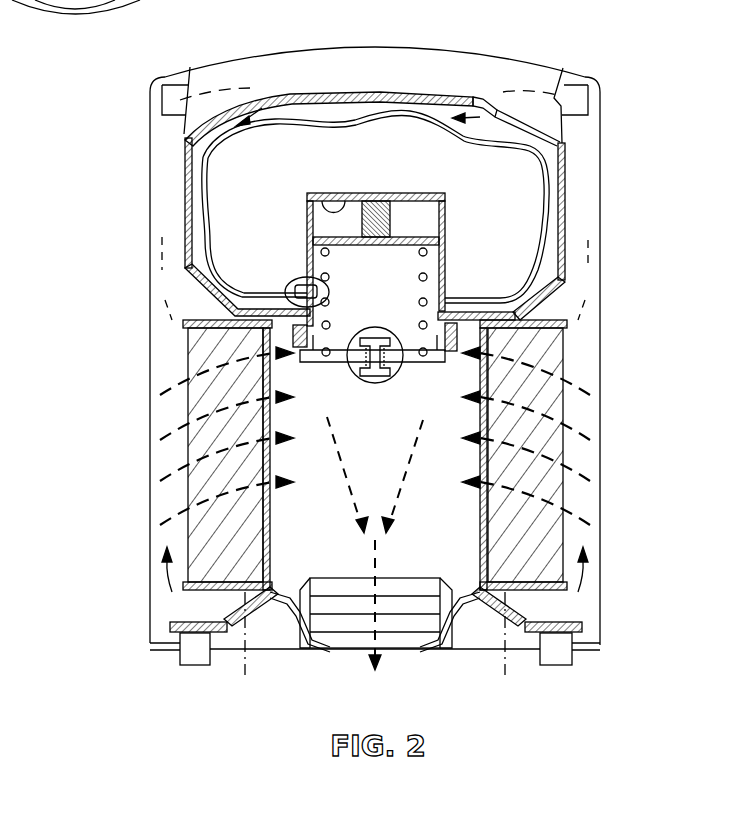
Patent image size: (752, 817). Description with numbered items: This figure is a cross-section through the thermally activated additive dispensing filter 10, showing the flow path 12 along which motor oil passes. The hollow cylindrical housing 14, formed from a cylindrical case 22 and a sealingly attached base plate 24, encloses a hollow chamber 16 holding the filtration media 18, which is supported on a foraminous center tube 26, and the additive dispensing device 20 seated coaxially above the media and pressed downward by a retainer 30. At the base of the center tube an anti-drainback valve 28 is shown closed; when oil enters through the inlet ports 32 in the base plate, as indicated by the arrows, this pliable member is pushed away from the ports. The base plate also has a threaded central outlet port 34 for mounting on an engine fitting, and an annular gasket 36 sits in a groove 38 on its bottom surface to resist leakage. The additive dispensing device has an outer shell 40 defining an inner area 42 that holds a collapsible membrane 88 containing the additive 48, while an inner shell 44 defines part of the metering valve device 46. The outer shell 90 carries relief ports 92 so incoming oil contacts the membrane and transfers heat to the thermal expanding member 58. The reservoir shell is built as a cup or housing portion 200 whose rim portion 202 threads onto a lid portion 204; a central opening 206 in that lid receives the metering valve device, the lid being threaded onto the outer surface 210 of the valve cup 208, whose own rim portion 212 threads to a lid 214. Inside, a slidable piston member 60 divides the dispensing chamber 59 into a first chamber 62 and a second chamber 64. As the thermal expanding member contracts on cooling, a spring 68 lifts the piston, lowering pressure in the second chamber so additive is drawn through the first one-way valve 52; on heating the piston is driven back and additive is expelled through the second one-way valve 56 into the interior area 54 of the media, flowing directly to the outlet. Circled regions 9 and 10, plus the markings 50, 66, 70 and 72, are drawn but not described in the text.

The detail region of FIG. 9 is at (287, 292).
The thermally activated additive dispensing filter 10 is at (140, 102).
The flow path 12 is at (152, 588).
The hollow cylindrical housing 14 is at (150, 90).
The hollow chamber 16 is at (150, 205).
The filtration media 18 is at (183, 346).
The additive dispensing device 20 is at (175, 163).
The case 22 is at (150, 564).
The base plate 24 is at (163, 650).
The foraminous center tube 26 is at (481, 458).
The anti-drainback valve 28 is at (272, 590).
The retainer 30 is at (578, 128).
The inlet ports 32 is at (240, 625).
The threaded central outlet port 34 is at (376, 639).
The annular external seal or gasket 36 is at (555, 667).
The groove 38 is at (553, 637).
The outer shell 40 is at (186, 212).
The inner area 42 is at (201, 228).
The inner shell 44 is at (303, 188).
The metering valve device 46 is at (306, 203).
The additive 48 is at (364, 166).
The coil winding 50 is at (160, 404).
The first one-way valve 52 is at (296, 286).
The interior area of the filtration media 54 is at (364, 446).
The second one-way valve 56 is at (385, 336).
The thermal expanding member 58 is at (412, 195).
The dispensing chamber 59 is at (364, 276).
The slidable piston member 60 is at (446, 210).
The first chamber 62 is at (320, 195).
The second chamber 64 is at (448, 257).
The bobbin sidewall 66 is at (446, 237).
The biasing member or spring 68 is at (330, 351).
The bobbin flange 70 is at (310, 248).
The terminal lead 72 is at (410, 365).
The collapsible membrane 88 is at (553, 190).
The outer shell 90 is at (577, 152).
The relief ports 92 is at (258, 104).
The cup or housing portion 200 is at (567, 215).
The rim portion 202 is at (570, 263).
The lid portion 204 is at (555, 307).
The central opening 206 is at (446, 298).
The cup or housing portion 208 is at (457, 200).
The outer surface 210 is at (446, 280).
The rim portion 212 is at (455, 325).
The lid 214 is at (455, 360).